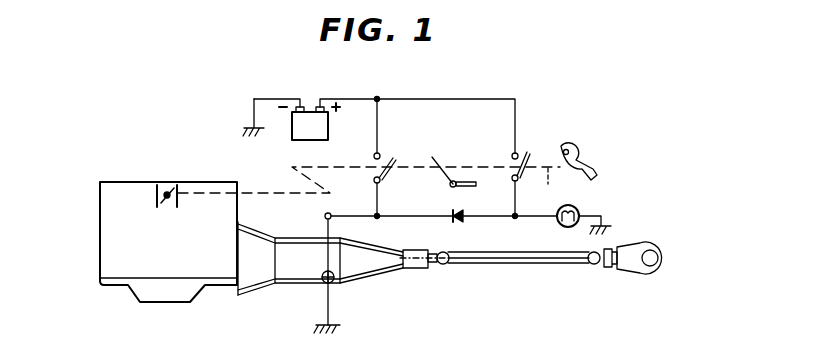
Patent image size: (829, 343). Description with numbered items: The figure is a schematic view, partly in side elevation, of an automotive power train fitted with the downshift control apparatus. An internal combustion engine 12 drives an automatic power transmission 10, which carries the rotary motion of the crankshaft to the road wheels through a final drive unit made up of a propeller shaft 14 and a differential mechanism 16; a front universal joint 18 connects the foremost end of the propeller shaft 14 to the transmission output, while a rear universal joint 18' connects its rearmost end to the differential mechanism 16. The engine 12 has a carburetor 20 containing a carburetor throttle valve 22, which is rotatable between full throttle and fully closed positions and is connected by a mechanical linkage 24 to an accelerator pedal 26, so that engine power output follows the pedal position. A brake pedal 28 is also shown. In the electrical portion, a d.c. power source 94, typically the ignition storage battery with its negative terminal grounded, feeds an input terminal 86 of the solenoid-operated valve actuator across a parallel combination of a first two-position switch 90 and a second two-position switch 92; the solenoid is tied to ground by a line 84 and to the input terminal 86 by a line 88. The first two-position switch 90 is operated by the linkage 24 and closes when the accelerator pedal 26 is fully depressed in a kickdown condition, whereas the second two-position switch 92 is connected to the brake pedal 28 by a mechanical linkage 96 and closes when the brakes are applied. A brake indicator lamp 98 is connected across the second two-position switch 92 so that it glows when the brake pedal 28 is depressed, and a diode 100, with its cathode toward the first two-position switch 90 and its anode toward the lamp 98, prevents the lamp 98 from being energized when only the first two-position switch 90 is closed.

The automatic power transmission 10 is at (287, 293).
The internal combustion engine 12 is at (181, 266).
The propeller shaft 14 is at (536, 266).
The differential mechanism 16 is at (651, 275).
The front universal joint 18 is at (453, 279).
The rear universal joint 18' is at (579, 279).
The carburetor 20 is at (157, 197).
The carburetor throttle valve 22 is at (171, 190).
The mechanical linkage 24 is at (293, 186).
The accelerator pedal 26 is at (455, 176).
The brake pedal 28 is at (583, 161).
The line 84 is at (336, 312).
The input terminal 86 is at (331, 210).
The line 88 is at (325, 219).
The first two-position switch 90 is at (391, 156).
The second two-position switch 92 is at (529, 158).
The d.c. power source 94 is at (329, 133).
The mechanical linkage 96 is at (535, 186).
The brake indicator lamp 98 is at (580, 211).
The diode 100 is at (465, 220).